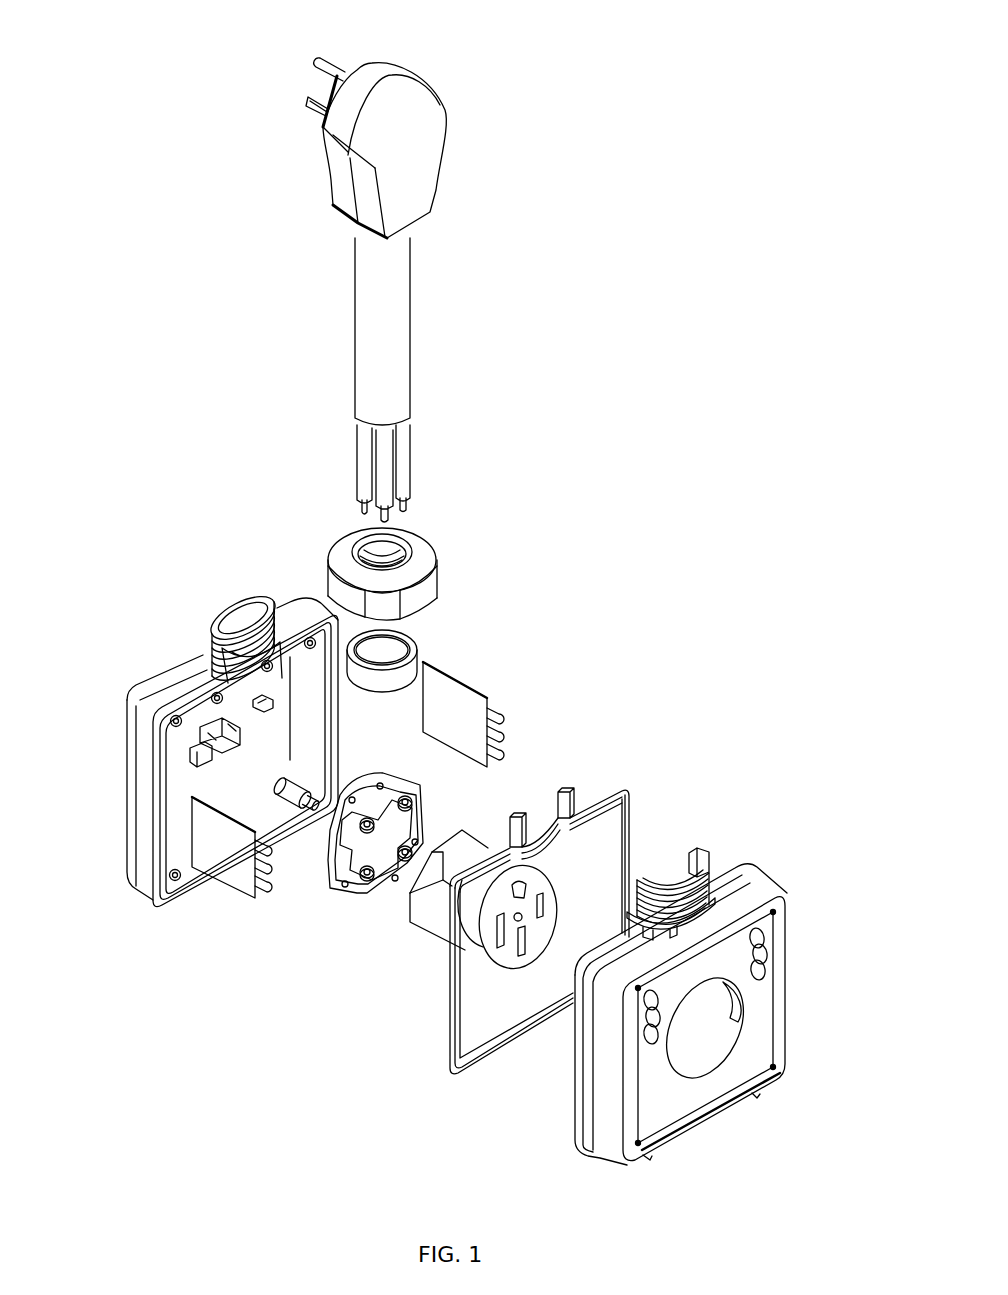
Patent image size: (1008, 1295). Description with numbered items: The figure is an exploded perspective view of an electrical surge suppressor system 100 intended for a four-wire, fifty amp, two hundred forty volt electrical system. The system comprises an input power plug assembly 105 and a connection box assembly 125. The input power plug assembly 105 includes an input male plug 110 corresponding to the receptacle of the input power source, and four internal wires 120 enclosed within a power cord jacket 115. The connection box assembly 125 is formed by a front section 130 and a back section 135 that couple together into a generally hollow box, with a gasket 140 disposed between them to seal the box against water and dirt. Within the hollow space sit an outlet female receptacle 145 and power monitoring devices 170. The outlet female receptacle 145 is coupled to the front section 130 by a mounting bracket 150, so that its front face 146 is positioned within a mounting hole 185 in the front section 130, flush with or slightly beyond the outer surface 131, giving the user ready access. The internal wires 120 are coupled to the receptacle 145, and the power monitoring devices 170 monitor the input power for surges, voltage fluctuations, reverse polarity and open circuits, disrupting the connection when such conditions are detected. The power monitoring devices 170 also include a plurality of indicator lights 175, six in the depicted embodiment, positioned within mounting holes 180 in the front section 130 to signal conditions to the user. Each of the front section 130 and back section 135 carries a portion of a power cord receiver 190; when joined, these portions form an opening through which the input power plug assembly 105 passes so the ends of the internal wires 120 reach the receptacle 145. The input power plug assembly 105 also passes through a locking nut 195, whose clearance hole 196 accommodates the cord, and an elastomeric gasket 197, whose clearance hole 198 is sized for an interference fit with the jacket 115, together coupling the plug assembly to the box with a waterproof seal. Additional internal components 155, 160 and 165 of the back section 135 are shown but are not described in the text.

The electrical surge suppressor system 100 is at (262, 64).
The input power plug assembly 105 is at (508, 97).
The input male plug 110 is at (398, 83).
The power cord jacket 115 is at (388, 340).
The internal wires 120 is at (388, 463).
The connection box assembly 125 is at (262, 1058).
The front section 130 is at (713, 1112).
The outer surface 131 is at (662, 1110).
The back section 135 is at (160, 692).
The gasket 140 is at (620, 785).
The outlet female receptacle 145 is at (418, 913).
The front face 146 is at (533, 890).
The mounting bracket 150 is at (347, 890).
The housing opening 155 is at (280, 678).
The bracket 160 is at (207, 740).
The screw 165 is at (275, 781).
The power monitoring devices 170 is at (200, 903).
The indicator lights 175 is at (250, 897).
The mounting holes 180 is at (767, 967).
The mounting hole 185 is at (727, 1047).
The power cord receiver 190 is at (212, 630).
The locking nut 195 is at (420, 588).
The clearance hole 196 is at (400, 532).
The gasket 197 is at (405, 672).
The clearance hole 198 is at (388, 646).